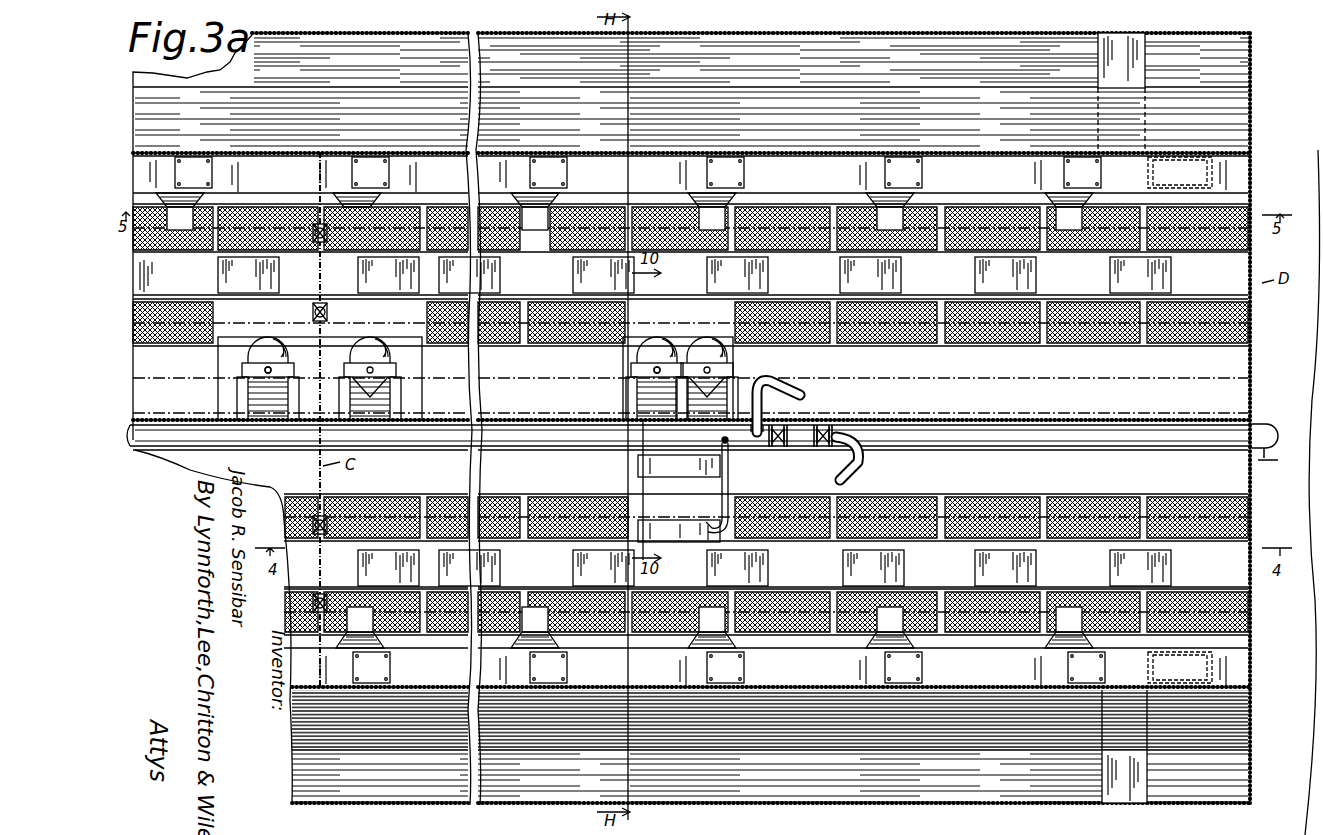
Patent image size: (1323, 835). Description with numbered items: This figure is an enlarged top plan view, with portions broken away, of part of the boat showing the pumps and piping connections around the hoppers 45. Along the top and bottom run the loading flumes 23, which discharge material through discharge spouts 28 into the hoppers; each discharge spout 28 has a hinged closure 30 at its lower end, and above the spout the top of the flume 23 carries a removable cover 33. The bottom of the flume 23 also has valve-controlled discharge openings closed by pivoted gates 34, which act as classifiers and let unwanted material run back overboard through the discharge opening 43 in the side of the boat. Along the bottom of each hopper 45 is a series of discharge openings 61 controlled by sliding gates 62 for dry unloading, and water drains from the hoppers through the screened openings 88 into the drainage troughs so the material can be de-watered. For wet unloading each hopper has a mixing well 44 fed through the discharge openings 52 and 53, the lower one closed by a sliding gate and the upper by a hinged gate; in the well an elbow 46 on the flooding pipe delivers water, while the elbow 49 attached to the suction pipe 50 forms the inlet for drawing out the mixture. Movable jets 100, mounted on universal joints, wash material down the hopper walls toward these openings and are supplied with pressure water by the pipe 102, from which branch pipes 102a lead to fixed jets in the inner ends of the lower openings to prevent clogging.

The loading flume 23 is at (785, 172).
The discharge spout 28 is at (370, 197).
The hinged closure 30 is at (538, 218).
The removable cover 33 is at (212, 176).
The pivoted gate 34 is at (1184, 180).
The discharge opening 43 is at (1110, 70).
The mixing well 44 is at (232, 352).
The hopper 45 is at (928, 292).
The elbow 46 is at (258, 357).
The elbow 49 is at (358, 360).
The suction pipe 50 is at (412, 393).
The discharge opening 52 is at (668, 530).
The discharge opening 53 is at (646, 462).
The discharge opening 61 is at (217, 271).
The sliding gate 62 is at (358, 272).
The screened opening 88 is at (556, 316).
The movable jet 100 is at (795, 392).
The jet supply pressure pipe 102 is at (1060, 448).
The pipe 102a is at (731, 474).